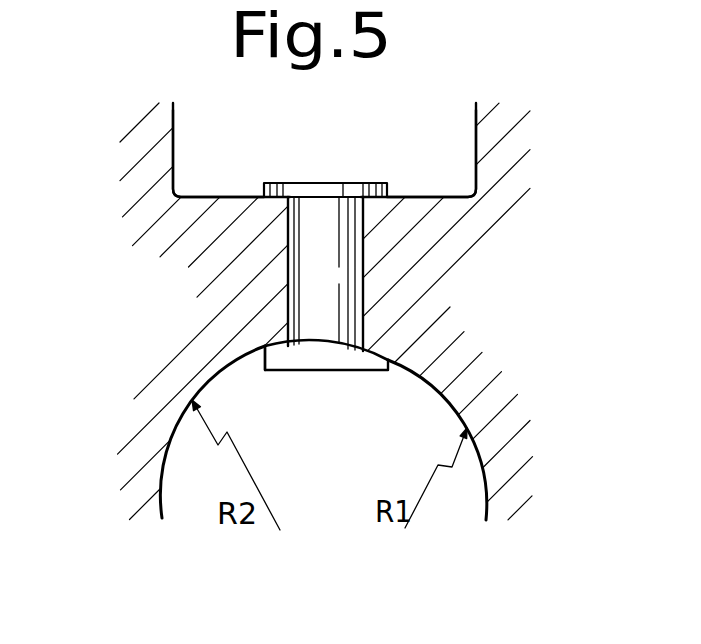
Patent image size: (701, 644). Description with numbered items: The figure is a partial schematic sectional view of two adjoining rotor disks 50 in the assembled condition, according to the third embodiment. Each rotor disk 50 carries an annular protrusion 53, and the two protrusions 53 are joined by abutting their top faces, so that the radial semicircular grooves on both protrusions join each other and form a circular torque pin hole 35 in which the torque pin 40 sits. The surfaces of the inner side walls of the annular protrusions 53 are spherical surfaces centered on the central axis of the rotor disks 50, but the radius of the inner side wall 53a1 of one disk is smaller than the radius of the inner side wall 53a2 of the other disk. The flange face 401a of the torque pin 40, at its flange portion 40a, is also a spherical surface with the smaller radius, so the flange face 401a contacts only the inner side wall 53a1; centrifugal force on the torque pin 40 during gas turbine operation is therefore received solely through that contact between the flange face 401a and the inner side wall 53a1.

The rotor disk 50 is at (110, 239).
The annular protrusion 53 is at (235, 233).
The torque pin 40 is at (322, 227).
The torque pin hole 35 is at (361, 286).
The pin foot 40a is at (325, 360).
The flange face 401a is at (270, 350).
The inner side wall 53a1 is at (440, 395).
The inner side wall 53a2 is at (165, 440).